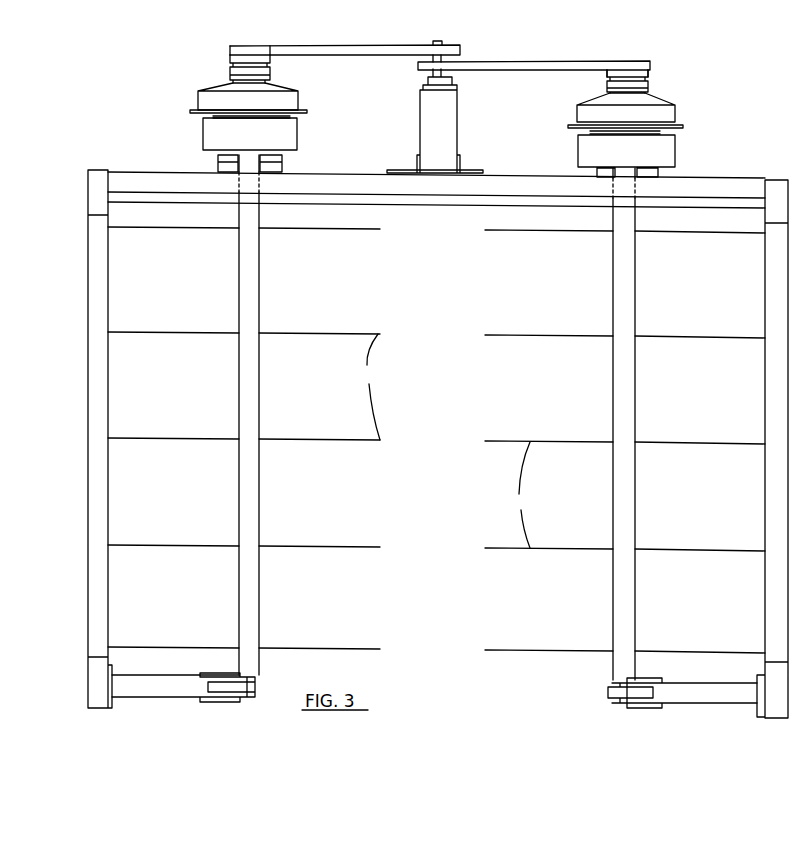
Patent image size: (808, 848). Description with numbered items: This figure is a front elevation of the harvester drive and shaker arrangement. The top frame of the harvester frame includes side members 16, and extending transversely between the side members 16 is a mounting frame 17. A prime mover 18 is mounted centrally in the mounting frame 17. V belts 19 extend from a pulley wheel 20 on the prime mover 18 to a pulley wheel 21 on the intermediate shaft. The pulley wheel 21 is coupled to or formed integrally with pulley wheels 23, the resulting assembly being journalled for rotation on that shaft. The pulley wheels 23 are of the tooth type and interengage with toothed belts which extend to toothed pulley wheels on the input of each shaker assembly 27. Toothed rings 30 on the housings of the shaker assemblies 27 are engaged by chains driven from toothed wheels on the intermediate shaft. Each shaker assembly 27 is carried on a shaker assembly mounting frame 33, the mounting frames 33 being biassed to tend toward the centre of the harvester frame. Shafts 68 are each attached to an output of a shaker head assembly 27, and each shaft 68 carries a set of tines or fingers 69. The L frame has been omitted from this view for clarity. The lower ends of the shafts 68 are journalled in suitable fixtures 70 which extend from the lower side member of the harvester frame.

The side members 16 is at (102, 182).
The mounting frame 17 is at (504, 172).
The prime mover 18 is at (420, 137).
The V belts 19 is at (358, 56).
The pulley wheel 20 is at (461, 50).
The pulley wheel 21 is at (230, 47).
The pulley wheels 23 is at (270, 74).
The shaker assembly 27 is at (192, 103).
The toothed rings 30 is at (307, 112).
The shaker assembly mounting frame 33 is at (292, 136).
The shafts 68 is at (250, 376).
The tines or fingers 69 is at (436, 440).
The fixtures 70 is at (147, 682).